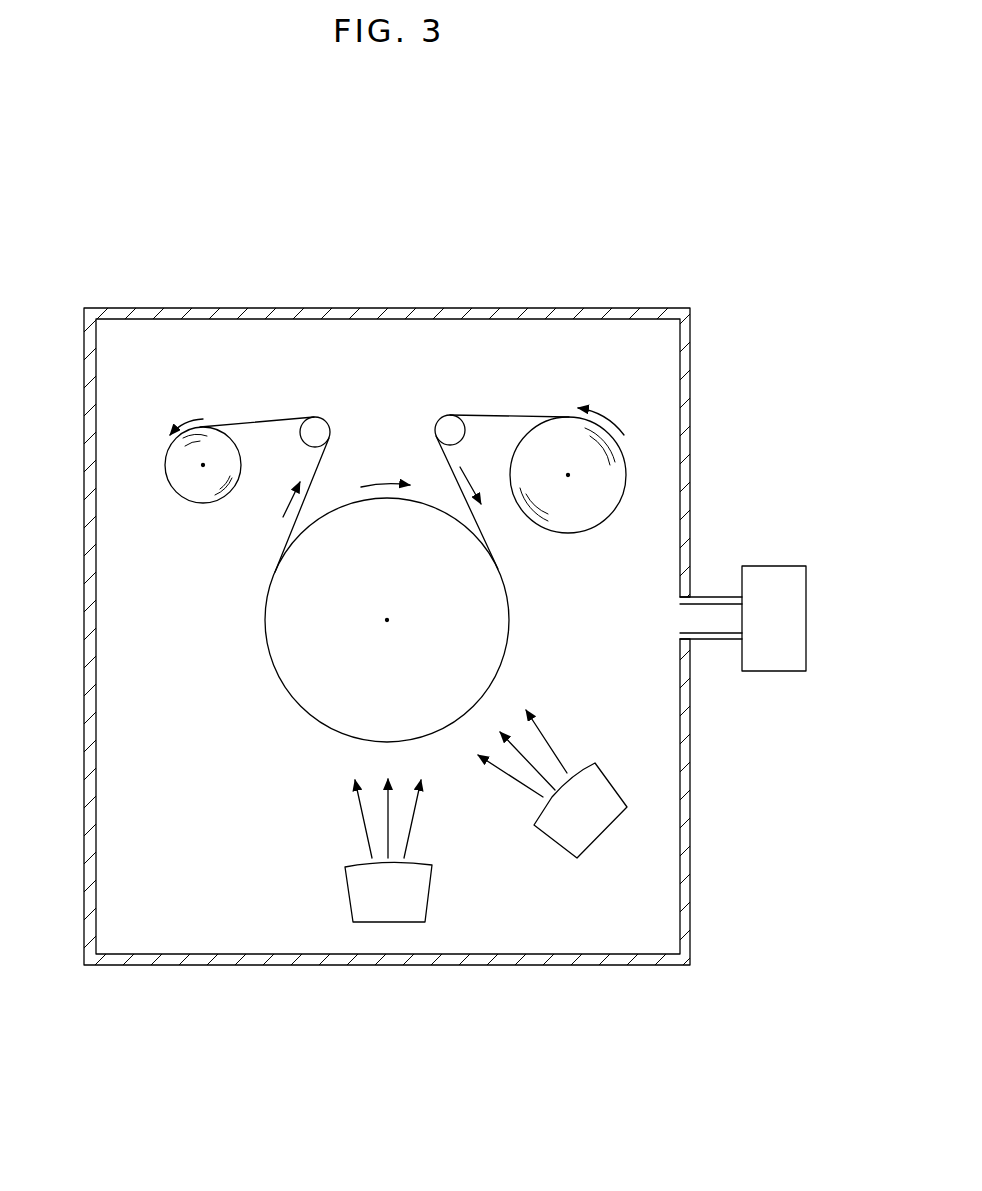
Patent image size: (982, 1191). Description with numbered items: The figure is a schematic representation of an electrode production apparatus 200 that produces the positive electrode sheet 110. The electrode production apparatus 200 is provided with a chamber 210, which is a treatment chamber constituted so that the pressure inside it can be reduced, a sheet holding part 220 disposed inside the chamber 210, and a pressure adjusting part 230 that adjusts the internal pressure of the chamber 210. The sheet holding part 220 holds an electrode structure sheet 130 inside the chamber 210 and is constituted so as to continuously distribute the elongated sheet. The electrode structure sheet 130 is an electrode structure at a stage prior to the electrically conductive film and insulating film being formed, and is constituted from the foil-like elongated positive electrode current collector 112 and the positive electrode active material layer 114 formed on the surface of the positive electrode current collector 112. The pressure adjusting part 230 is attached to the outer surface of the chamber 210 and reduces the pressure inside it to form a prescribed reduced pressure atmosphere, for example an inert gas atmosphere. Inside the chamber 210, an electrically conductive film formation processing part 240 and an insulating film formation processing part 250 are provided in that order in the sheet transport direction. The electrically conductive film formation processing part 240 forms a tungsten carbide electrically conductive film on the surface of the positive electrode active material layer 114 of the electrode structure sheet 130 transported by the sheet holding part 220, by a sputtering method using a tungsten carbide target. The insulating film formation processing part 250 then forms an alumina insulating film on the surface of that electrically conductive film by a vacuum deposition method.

The electrode production apparatus 200 is at (650, 270).
The chamber 210 is at (372, 308).
The sheet holding part 220 is at (502, 617).
The pressure adjusting part 230 is at (770, 576).
The electrically conductive film formation processing part 240 is at (593, 822).
The insulating film formation processing part 250 is at (376, 912).
The positive electrode sheet 110 is at (247, 418).
The electrode structure sheet 130 is at (556, 449).
The positive electrode current collector 112 is at (568, 475).
The positive electrode active material layer 114 is at (518, 415).